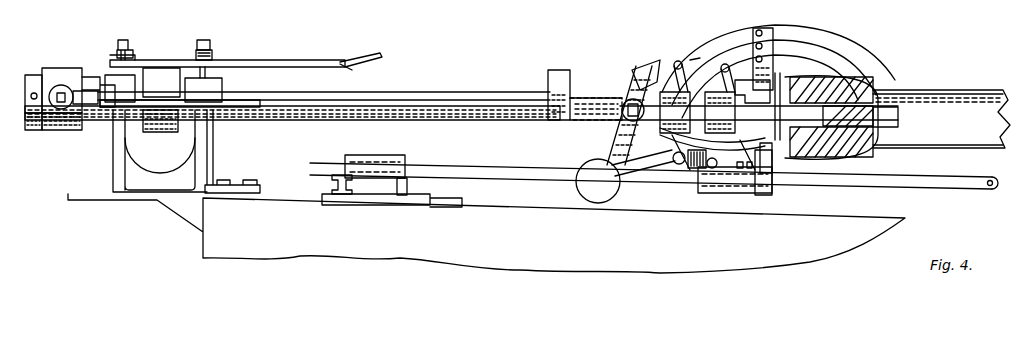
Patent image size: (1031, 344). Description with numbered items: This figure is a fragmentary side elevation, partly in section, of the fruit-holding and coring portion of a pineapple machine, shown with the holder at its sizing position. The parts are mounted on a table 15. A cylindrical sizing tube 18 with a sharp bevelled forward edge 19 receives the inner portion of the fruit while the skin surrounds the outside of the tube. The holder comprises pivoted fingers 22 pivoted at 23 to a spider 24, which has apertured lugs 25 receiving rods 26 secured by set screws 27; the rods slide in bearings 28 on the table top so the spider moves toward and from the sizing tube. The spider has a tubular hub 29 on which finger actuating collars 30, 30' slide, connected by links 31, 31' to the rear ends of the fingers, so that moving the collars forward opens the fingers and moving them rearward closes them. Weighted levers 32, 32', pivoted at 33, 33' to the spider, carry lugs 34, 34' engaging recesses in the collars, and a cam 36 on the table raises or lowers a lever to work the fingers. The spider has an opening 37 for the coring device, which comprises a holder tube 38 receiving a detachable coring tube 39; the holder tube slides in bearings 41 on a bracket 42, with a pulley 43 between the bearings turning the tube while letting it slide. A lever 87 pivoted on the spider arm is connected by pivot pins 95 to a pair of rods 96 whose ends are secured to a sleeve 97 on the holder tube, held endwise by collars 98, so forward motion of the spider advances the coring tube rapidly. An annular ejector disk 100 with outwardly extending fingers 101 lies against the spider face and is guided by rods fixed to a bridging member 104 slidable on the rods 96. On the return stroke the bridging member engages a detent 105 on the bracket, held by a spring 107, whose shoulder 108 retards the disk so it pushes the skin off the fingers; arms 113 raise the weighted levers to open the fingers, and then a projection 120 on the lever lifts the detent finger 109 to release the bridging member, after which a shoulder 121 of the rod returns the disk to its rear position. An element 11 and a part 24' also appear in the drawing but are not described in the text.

The frame block 11 is at (203, 90).
The platform or table 15 is at (486, 233).
The sizing tube or horn 18 is at (941, 119).
The bevelled forward edge 19 is at (808, 156).
The pivoted fingers 22 is at (800, 54).
The pivot 23 is at (770, 42).
The spider 24 is at (783, 80).
The pin 24' is at (758, 106).
The apertured sleeves or lugs 25 is at (786, 180).
The rods 26 is at (940, 180).
The set screws 27 is at (778, 212).
The bearings 28 is at (407, 158).
The tubular part or hub 29 is at (693, 95).
The finger actuating collar 30 is at (640, 69).
The finger actuating collar 30' is at (702, 36).
The links 31 is at (675, 64).
The links 31' is at (739, 62).
The weighted lever 32 is at (643, 176).
The weighted lever 32' is at (668, 189).
The pivot 33 is at (610, 140).
The pivot 33' is at (737, 205).
The lug 34 is at (706, 148).
The lug 34' is at (767, 194).
The cam 36 is at (420, 196).
The opening 37 is at (759, 115).
The holder tube 38 is at (456, 99).
The coring tube 39 is at (890, 142).
The bearings 41 is at (120, 88).
The bracket 42 is at (186, 151).
The pulley 43 is at (161, 82).
The lever 87 is at (607, 203).
The pivot pins 95 is at (628, 101).
The rods 96 is at (283, 104).
The sleeve 97 is at (70, 72).
The collars 98 is at (31, 73).
The ejector plate or disk 100 is at (866, 82).
The fingers 101 is at (776, 152).
The bridging or connecting member 104 is at (556, 71).
The detent or stop member 105 is at (315, 60).
The spring 107 is at (212, 56).
The shoulder 108 is at (350, 68).
The finger or projection 109 is at (374, 56).
The upwardly extending arms 113 is at (703, 196).
The projection 120 is at (644, 66).
The shoulder 121 is at (600, 97).